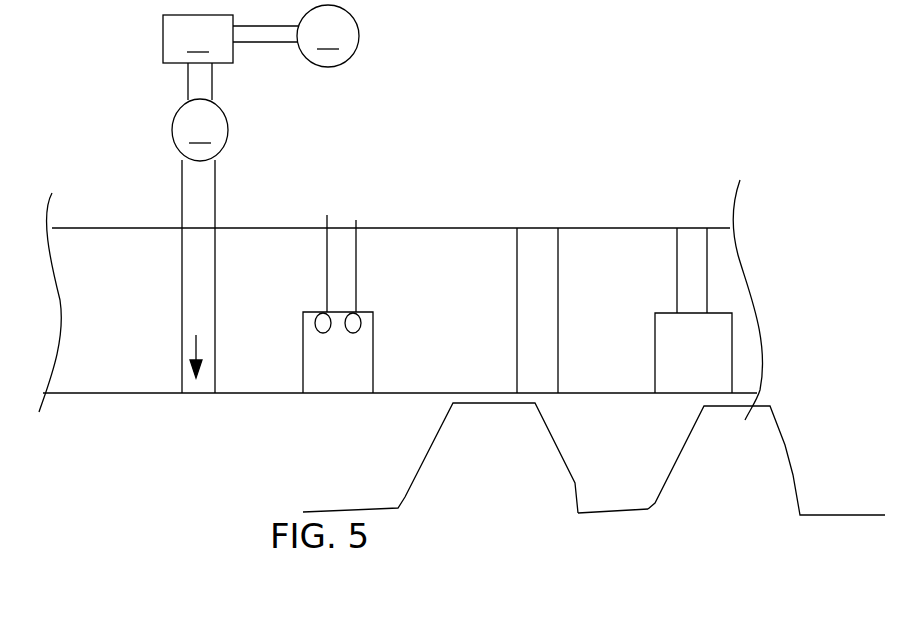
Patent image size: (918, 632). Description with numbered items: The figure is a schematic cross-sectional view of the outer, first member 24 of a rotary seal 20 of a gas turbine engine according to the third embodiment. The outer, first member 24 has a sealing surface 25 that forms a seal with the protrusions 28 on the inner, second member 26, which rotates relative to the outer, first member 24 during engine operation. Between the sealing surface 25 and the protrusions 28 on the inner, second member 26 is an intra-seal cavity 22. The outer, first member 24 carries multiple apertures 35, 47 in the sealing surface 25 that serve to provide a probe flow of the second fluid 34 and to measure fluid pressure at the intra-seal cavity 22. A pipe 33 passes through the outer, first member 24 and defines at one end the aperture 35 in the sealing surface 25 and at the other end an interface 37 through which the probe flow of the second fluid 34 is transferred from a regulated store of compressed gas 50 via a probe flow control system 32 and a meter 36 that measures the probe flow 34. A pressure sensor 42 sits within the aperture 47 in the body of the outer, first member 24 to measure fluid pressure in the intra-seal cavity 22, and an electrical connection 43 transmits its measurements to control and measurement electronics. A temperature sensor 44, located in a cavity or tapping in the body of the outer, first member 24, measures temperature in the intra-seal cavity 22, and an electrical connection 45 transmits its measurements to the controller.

The rotary seal 20 is at (690, 126).
The intra-seal cavity 22 is at (623, 458).
The outer, first member 24 is at (127, 255).
The sealing surface 25 is at (125, 395).
The inner, second member 26 is at (628, 515).
The protrusions 28 is at (511, 458).
The probe flow control system 32 is at (198, 39).
The pipe 33 is at (190, 315).
The probe flow of second fluid 34 is at (182, 338).
The aperture 35 is at (200, 393).
The meter 36 is at (200, 112).
The interface 37 is at (212, 228).
The pressure sensor 42 is at (357, 312).
The electrical connection 43 is at (356, 220).
The temperature sensor 44 is at (320, 312).
The electrical connection 45 is at (327, 215).
The aperture 47 is at (362, 395).
The regulated store of compressed gas 50 is at (296, 36).